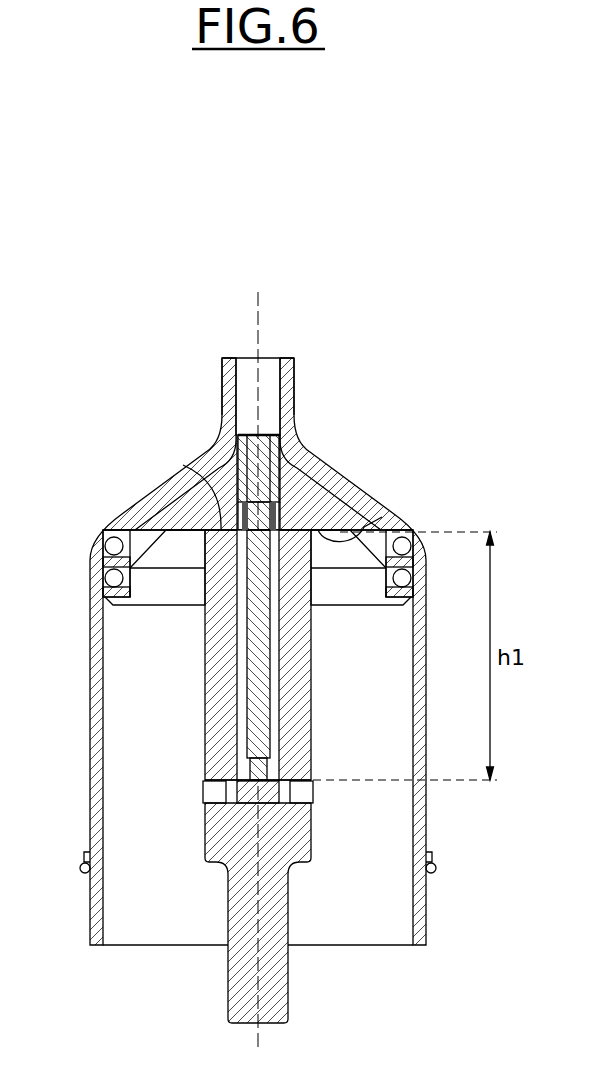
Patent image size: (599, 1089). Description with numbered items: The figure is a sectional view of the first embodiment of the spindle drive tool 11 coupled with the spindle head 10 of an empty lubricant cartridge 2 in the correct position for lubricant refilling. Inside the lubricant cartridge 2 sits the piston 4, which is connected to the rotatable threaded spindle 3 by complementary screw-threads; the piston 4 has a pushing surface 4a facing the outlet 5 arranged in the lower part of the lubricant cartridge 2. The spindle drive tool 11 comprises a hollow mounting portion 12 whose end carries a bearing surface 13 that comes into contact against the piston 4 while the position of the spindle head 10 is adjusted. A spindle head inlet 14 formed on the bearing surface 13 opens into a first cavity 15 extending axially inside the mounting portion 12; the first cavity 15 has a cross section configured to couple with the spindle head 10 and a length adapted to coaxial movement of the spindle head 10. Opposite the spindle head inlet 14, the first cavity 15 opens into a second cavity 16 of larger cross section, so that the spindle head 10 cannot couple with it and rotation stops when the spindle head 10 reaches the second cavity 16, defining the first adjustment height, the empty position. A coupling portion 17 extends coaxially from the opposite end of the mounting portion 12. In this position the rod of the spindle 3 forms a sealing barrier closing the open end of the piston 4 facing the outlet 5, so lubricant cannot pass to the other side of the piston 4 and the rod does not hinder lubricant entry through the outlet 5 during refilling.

The lubricant cartridge 2 is at (88, 607).
The spindle 3 is at (268, 456).
The piston 4 is at (315, 496).
The pushing surface 4a is at (359, 534).
The outlet 5 is at (284, 391).
The spindle head 10 is at (243, 788).
The spindle drive tool 11 is at (202, 749).
The mounting portion 12 is at (202, 711).
The bearing surface 13 is at (215, 502).
The spindle head inlet 14 is at (237, 533).
The first cavity 15 is at (247, 684).
The second cavity 16 is at (234, 795).
The coupling portion 17 is at (217, 1003).